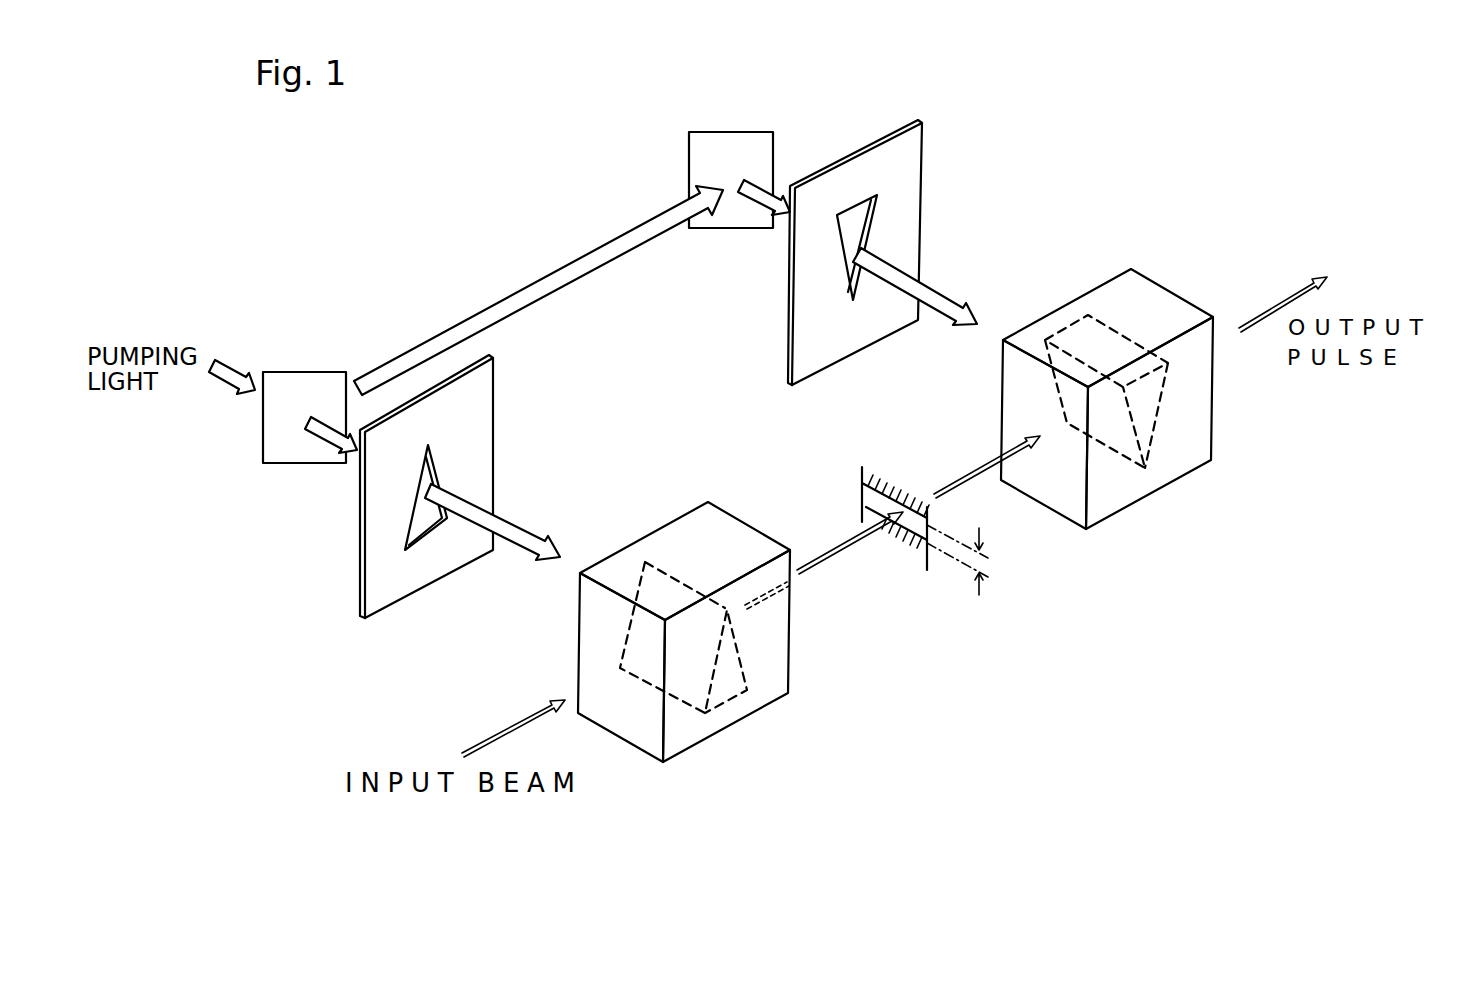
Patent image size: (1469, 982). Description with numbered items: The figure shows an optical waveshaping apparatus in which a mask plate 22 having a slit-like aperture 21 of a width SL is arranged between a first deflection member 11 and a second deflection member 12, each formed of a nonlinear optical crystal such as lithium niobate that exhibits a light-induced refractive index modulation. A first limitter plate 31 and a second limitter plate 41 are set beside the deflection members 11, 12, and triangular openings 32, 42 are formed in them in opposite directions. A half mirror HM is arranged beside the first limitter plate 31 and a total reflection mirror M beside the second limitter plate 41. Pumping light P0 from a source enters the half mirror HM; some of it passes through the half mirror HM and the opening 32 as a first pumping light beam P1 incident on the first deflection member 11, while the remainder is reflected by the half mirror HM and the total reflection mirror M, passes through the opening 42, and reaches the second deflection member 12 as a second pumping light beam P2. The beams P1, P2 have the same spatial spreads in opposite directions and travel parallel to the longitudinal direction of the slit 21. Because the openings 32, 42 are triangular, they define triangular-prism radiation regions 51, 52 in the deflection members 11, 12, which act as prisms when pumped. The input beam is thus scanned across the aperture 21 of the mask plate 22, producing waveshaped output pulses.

The first deflection member 11 is at (675, 742).
The second deflection member 12 is at (1105, 503).
The aperture 21 is at (860, 515).
The mask plate 22 is at (860, 478).
The first limitter plate 31 is at (482, 413).
The triangular opening 32 is at (427, 522).
The second limitter plate 41 is at (910, 165).
The triangular opening 42 is at (860, 218).
The first radiation region 51 is at (735, 688).
The second radiation region 52 is at (1153, 423).
The half mirror HM is at (310, 368).
The total reflection mirror M is at (745, 131).
The pumping light P0 is at (233, 363).
The first pumping light beam P1 is at (500, 522).
The second pumping light beam P2 is at (926, 286).
The width SL is at (976, 569).